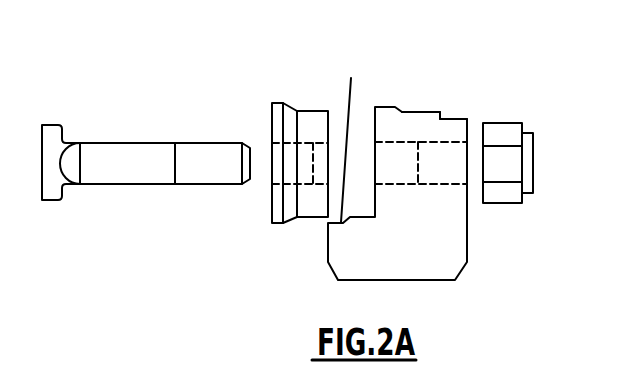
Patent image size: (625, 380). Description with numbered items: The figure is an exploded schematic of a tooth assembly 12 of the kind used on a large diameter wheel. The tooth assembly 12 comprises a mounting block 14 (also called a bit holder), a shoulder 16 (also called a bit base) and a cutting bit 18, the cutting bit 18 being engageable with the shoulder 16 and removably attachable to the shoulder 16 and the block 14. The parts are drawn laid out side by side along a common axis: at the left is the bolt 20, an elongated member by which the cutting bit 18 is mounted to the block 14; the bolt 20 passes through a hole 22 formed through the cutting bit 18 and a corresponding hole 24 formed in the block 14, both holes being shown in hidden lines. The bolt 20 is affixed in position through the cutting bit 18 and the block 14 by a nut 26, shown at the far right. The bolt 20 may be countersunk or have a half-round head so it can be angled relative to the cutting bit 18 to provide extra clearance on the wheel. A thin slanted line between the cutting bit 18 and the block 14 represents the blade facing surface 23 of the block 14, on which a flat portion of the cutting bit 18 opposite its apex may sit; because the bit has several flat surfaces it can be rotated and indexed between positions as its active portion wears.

The tooth assembly 12 is at (198, 62).
The mounting block 14 is at (428, 111).
The shoulder 16 is at (375, 107).
The cutting bit 18 is at (290, 105).
The bolt 20 is at (155, 185).
The hole 22 is at (313, 163).
The blade facing surface 23 is at (351, 78).
The hole 24 is at (440, 173).
The nut 26 is at (521, 123).